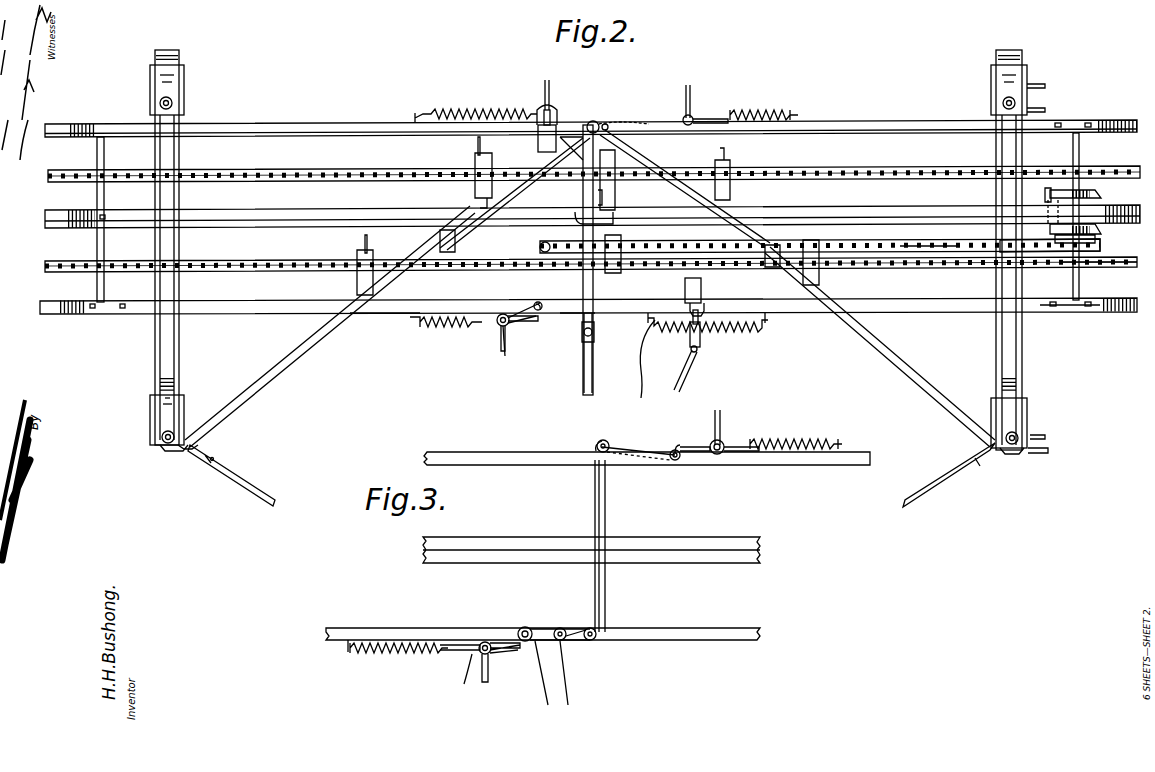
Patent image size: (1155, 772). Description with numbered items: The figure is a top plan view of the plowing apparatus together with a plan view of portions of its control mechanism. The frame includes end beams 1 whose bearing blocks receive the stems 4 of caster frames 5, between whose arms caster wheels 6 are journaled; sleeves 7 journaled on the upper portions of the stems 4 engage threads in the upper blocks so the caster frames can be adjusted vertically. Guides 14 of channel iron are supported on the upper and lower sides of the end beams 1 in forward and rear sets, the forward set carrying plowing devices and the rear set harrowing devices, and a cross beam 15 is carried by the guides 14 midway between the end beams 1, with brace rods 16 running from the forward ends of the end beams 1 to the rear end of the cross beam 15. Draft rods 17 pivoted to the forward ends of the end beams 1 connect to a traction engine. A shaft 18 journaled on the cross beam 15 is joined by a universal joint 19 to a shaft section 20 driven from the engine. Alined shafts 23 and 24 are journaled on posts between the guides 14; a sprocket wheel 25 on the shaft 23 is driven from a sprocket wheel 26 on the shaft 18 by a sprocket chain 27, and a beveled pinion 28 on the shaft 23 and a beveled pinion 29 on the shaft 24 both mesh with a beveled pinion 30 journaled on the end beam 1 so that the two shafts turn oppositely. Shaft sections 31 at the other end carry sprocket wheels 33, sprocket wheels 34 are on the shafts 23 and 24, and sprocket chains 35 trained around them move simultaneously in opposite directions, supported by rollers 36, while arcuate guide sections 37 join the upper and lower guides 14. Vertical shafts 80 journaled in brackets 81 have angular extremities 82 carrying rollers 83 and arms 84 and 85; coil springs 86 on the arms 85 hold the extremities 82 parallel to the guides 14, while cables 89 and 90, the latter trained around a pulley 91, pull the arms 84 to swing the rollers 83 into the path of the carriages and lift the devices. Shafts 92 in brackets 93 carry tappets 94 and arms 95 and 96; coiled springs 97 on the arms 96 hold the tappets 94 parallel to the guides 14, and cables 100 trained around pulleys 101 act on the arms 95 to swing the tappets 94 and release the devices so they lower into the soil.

In FIG. 2, the end beam 1 is at (157, 350).
In FIG. 2, the stem 4 is at (163, 440).
In FIG. 2, the caster frame 5 is at (150, 408).
In FIG. 2, the caster wheel 6 is at (176, 383).
In FIG. 2, the sleeve 7 is at (178, 452).
In FIG. 2, the guide 14 is at (380, 315).
In FIG. 2, the cross beam 15 is at (615, 200).
In FIG. 2, the brace rod 16 is at (258, 385).
In FIG. 2, the draft rod 17 is at (262, 490).
In FIG. 2, the shaft 18 is at (583, 285).
In FIG. 2, the universal joint 19 is at (596, 335).
In FIG. 2, the shaft section 20 is at (594, 378).
In FIG. 2, the shaft 23 is at (1072, 300).
In FIG. 2, the shaft 24 is at (1080, 130).
In FIG. 2, the sprocket wheel 25 is at (1100, 246).
In FIG. 2, the sprocket wheel 26 is at (540, 246).
In FIG. 2, the sprocket chain 27 is at (948, 252).
In FIG. 2, the beveled pinion 28 is at (1097, 228).
In FIG. 2, the beveled pinion 29 is at (1085, 188).
In FIG. 2, the beveled pinion 30 is at (1048, 188).
In FIG. 2, the shaft section 31 is at (104, 290).
In FIG. 2, the sprocket wheel 33 is at (55, 262).
In FIG. 2, the sprocket wheel 34 is at (1115, 265).
In FIG. 2, the sprocket chain 35 is at (905, 163).
In FIG. 2, the roller 36 is at (475, 158).
In FIG. 2, the arcuate guide section 37 is at (45, 303).
In FIG. 2, the vertically disposed shaft 80 is at (690, 340).
In FIG. 2, the bracket 81 is at (552, 112).
In FIG. 2, the angularly disposed extremity 82 is at (690, 315).
In FIG. 2, the roller 83 is at (685, 285).
In FIG. 2, the arm 84 is at (556, 122).
In FIG. 2, the arm 85 is at (545, 82).
In FIG. 2, the coil spring 86 is at (482, 108).
In FIG. 2, the cable 89 is at (683, 370).
In FIG. 2, the cable 90 is at (575, 213).
In FIG. 2, the pulley 91 is at (600, 120).
In FIG. 2, the shaft 92 is at (498, 325).
In FIG. 3, the shaft 92 is at (718, 454).
In FIG. 2, the bracket 93 is at (500, 326).
In FIG. 3, the bracket 93 is at (468, 684).
In FIG. 2, the tappet 94 is at (537, 318).
In FIG. 3, the tappet 94 is at (700, 448).
In FIG. 2, the arm 95 is at (690, 88).
In FIG. 3, the arm 95 is at (722, 430).
In FIG. 2, the arm 96 is at (702, 118).
In FIG. 3, the arm 96 is at (750, 452).
In FIG. 2, the coiled spring 97 is at (770, 112).
In FIG. 3, the coiled spring 97 is at (815, 440).
In FIG. 3, the cable 100 is at (541, 673).
In FIG. 3, the pulley 101 is at (518, 628).